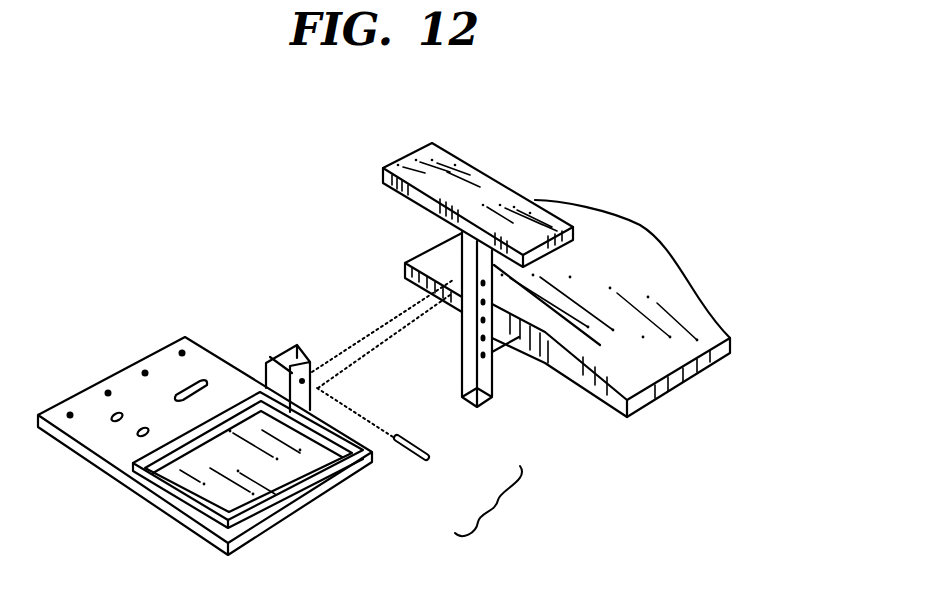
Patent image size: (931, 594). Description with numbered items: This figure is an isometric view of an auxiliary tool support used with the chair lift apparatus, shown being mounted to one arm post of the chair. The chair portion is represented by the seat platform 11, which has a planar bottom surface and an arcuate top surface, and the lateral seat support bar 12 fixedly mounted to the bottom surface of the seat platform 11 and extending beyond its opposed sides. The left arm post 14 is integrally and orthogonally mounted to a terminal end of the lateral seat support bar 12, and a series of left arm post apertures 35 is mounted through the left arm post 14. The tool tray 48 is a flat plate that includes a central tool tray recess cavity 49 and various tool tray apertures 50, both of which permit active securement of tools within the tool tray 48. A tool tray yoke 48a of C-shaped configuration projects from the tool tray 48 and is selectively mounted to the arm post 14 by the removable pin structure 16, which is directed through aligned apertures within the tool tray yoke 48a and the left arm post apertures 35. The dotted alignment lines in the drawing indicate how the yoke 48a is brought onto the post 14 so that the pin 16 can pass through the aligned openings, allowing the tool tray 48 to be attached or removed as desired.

The seat platform 11 is at (610, 230).
The lateral seat support bar 12 is at (493, 388).
The left arm post 14 is at (478, 373).
The removable pin structure 16 is at (418, 447).
The left arm post apertures 35 is at (474, 337).
The tool tray 48 is at (212, 362).
The tool tray yoke 48a is at (298, 344).
The tool tray recess cavity 49 is at (207, 493).
The tool tray apertures 50 is at (108, 393).